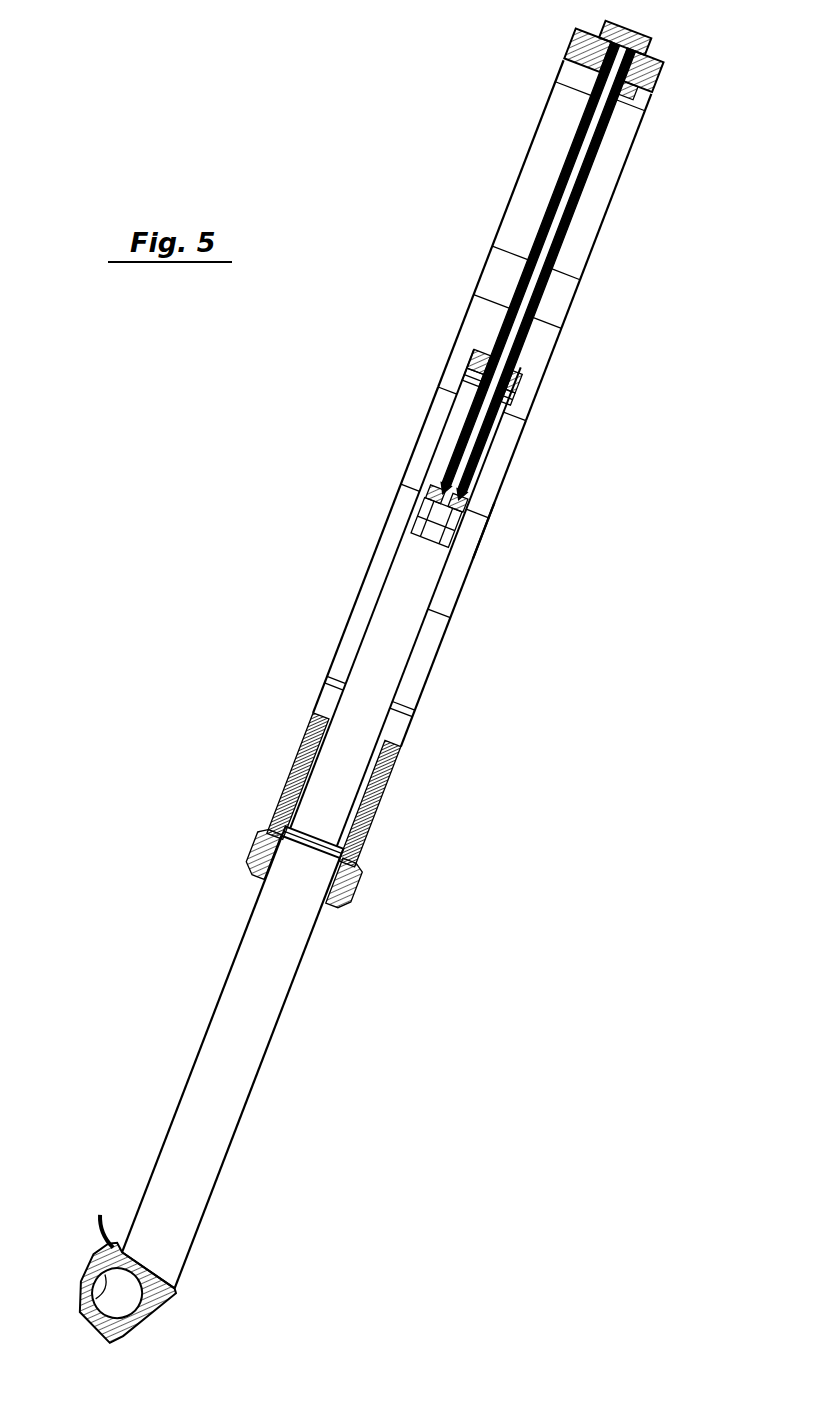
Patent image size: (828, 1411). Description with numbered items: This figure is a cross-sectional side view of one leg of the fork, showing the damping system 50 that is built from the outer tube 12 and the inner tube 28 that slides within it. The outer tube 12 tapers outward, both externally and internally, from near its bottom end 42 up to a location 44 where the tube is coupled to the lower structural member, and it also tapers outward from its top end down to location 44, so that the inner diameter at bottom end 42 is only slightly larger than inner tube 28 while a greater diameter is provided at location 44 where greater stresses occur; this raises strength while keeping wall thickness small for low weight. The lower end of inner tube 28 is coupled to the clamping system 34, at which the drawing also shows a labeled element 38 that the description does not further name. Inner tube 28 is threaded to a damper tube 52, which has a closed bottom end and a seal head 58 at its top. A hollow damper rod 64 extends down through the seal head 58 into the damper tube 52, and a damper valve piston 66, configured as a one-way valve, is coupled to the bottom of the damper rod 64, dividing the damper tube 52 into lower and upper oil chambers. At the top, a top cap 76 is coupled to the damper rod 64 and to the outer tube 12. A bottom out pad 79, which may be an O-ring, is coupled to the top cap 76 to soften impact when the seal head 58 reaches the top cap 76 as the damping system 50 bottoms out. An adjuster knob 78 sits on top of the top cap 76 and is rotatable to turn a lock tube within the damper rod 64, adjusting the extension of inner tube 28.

The outer tube 12 is at (505, 487).
The inner tube 28 is at (280, 1038).
The clamping system 34 is at (220, 1290).
The ball 38 is at (88, 1280).
The bottom end 42 is at (364, 836).
The location 44 is at (548, 396).
The damping system 50 is at (566, 528).
The damper tube 52 is at (433, 612).
The seal head 58 is at (516, 378).
The damper rod 64 is at (568, 222).
The damper valve piston 66 is at (414, 518).
The top cap 76 is at (572, 74).
The adjuster knob 78 is at (646, 40).
The bottom out pad 79 is at (636, 88).